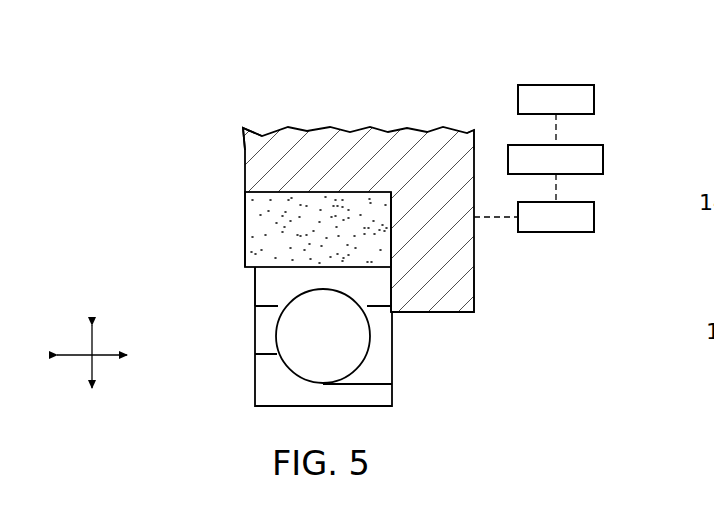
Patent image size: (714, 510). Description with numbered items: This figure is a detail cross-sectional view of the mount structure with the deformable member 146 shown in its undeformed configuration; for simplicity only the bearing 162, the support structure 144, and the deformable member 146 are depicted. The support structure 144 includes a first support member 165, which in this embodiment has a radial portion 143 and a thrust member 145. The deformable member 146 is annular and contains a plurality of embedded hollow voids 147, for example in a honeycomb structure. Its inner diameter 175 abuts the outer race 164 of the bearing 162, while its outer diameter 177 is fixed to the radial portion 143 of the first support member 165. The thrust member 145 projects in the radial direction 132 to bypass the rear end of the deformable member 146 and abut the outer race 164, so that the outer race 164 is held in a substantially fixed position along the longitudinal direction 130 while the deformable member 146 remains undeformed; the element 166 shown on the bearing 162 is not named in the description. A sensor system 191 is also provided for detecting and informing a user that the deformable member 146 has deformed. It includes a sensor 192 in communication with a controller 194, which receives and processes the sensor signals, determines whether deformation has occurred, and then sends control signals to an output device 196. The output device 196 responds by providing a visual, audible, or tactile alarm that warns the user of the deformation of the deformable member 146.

The longitudinal direction 130 is at (111, 355).
The radial direction 132 is at (91, 332).
The radial portion 143 is at (254, 147).
The support structure 144 is at (412, 148).
The thrust member 145 is at (466, 283).
The deformable member 146 is at (226, 240).
The voids 147 is at (250, 217).
The bearing 162 is at (246, 367).
The outer race 164 is at (262, 297).
The first support member 165 is at (475, 141).
The inner race 166 is at (256, 405).
The inner diameter 175 is at (264, 267).
The outer diameter 177 is at (345, 191).
The sensor system 191 is at (628, 127).
The sensor 192 is at (595, 217).
The controller 194 is at (605, 159).
The output device 196 is at (597, 101).